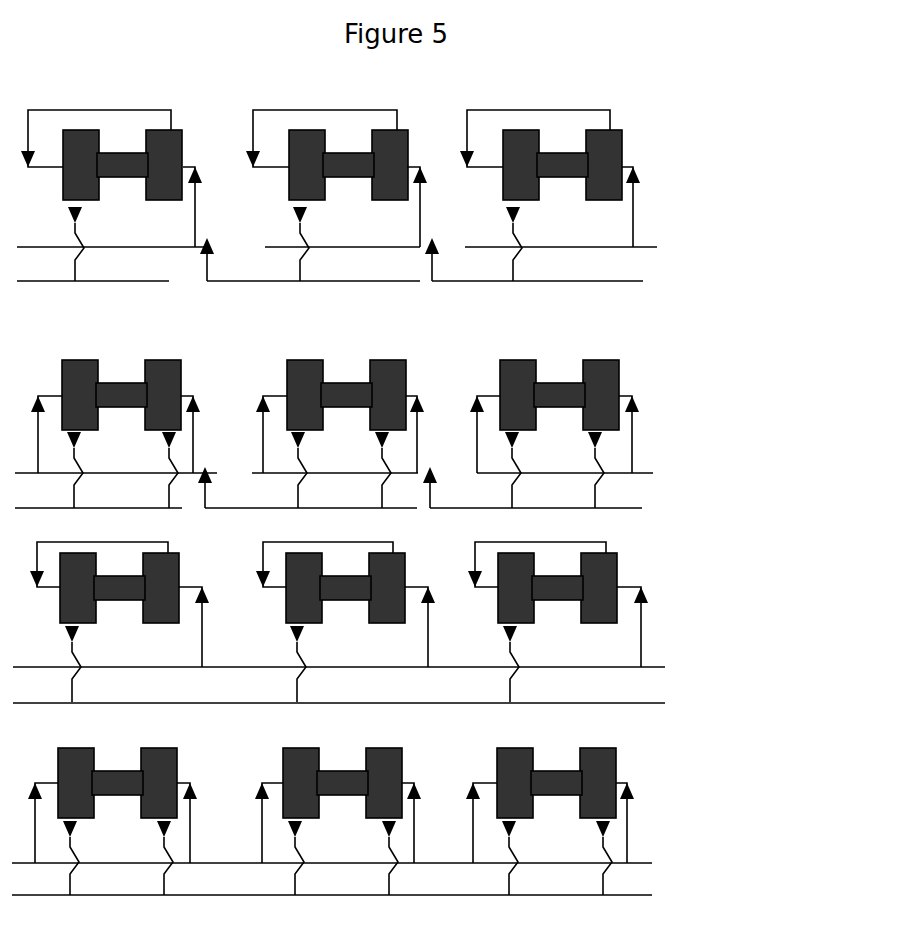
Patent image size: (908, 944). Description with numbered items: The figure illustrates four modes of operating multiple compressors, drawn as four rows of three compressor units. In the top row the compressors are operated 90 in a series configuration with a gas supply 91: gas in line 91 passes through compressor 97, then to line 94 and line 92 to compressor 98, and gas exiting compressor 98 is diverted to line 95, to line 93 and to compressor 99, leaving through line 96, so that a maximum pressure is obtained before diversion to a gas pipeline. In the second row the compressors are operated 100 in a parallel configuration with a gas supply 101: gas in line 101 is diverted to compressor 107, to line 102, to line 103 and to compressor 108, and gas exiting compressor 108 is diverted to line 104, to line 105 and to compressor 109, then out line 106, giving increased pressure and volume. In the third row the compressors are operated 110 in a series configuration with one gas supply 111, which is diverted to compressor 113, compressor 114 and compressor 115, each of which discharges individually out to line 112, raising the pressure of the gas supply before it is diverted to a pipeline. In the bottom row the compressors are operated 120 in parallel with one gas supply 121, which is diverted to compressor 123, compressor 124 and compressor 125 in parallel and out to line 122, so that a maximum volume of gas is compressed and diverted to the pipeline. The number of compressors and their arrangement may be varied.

The series configuration operation 90 is at (426, 195).
The gas supply 91 is at (537, 238).
The line 92 is at (323, 235).
The line 93 is at (97, 235).
The line 94 is at (525, 283).
The line 95 is at (298, 283).
The line 96 is at (75, 281).
The compressor 97 is at (562, 145).
The compressor 98 is at (348, 143).
The compressor 99 is at (123, 142).
The parallel configuration operation 100 is at (437, 417).
The gas supply 101 is at (523, 463).
The line 102 is at (523, 507).
The line 103 is at (310, 463).
The line 104 is at (310, 507).
The line 105 is at (85, 463).
The line 106 is at (85, 507).
The compressor 107 is at (570, 383).
The compressor 108 is at (357, 383).
The compressor 109 is at (135, 383).
The series configuration operation with one gas supply 110 is at (441, 614).
The gas supply 111 is at (438, 658).
The line 112 is at (333, 703).
The compressor 113 is at (558, 565).
The compressor 114 is at (343, 565).
The compressor 115 is at (120, 565).
The parallel operation with one gas supply 120 is at (440, 806).
The gas supply 121 is at (307, 852).
The line 122 is at (417, 895).
The compressor 123 is at (557, 772).
The compressor 124 is at (343, 772).
The compressor 125 is at (118, 772).